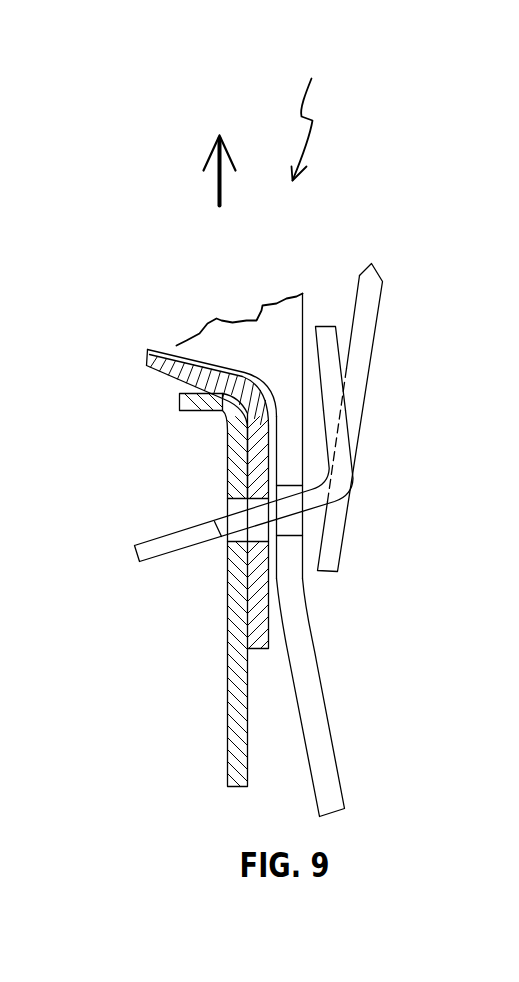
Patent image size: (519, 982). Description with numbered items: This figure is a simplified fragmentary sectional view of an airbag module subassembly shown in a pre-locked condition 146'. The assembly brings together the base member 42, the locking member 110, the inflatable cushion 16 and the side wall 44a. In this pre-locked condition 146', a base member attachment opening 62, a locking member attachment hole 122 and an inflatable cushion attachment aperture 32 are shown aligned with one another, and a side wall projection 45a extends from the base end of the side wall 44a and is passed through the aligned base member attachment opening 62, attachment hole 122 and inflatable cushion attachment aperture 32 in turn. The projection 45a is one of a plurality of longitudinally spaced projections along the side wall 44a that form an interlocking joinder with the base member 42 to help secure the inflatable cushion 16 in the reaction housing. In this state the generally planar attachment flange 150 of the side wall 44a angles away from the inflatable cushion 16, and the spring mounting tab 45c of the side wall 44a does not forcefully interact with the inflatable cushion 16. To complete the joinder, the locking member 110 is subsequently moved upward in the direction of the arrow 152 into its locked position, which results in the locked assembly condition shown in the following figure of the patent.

The arrow 152 is at (216, 190).
The pre-locked condition 146' is at (310, 115).
The inflatable cushion 16 is at (237, 340).
The attachment aperture 32 is at (283, 543).
The locking member 110 is at (153, 350).
The base member attachment opening 62 is at (238, 557).
The attachment hole 122 is at (255, 560).
The base member 42 is at (182, 403).
The projection 45a is at (237, 520).
The spring mounting tab 45c is at (323, 343).
The first side wall 44a is at (363, 325).
The attachment flange 150 is at (350, 372).